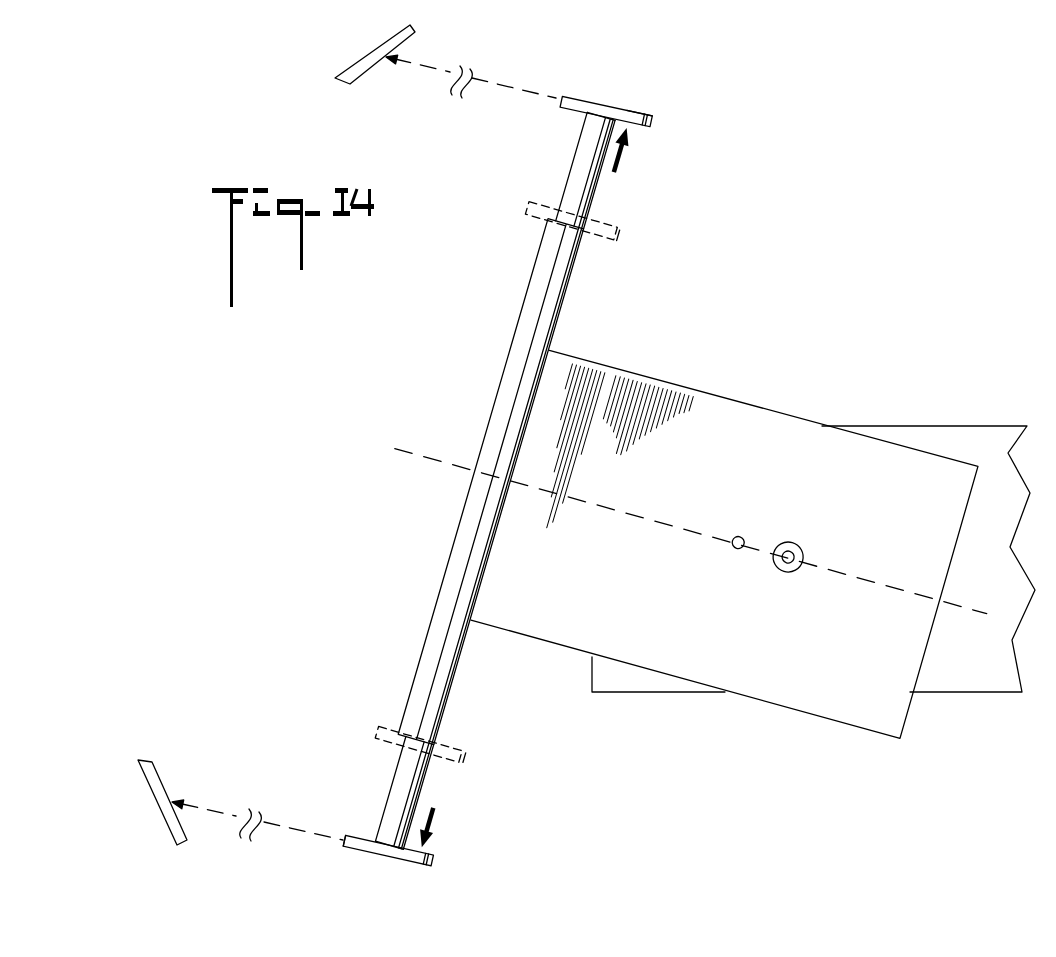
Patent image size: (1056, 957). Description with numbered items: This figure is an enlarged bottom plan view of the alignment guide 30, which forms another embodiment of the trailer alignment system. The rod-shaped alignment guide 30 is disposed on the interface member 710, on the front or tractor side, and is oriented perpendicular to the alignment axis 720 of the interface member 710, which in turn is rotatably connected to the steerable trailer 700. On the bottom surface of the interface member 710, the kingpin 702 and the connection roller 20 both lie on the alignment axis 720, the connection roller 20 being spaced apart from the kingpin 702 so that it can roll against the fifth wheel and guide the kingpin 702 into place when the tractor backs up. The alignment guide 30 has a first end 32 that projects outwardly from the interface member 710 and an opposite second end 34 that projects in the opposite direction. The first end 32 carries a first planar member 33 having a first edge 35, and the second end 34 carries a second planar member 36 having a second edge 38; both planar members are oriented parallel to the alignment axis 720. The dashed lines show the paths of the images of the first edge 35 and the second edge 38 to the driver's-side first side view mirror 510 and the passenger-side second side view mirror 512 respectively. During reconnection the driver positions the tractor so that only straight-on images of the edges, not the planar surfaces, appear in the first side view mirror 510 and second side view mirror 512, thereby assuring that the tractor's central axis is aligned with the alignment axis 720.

The connection roller 20 is at (803, 560).
The alignment guide 30 is at (446, 380).
The first end 32 is at (385, 838).
The first planar member 33 is at (387, 858).
The second end 34 is at (600, 120).
The first edge 35 is at (343, 840).
The second planar member 36 is at (610, 108).
The second edge 38 is at (557, 97).
The first side view mirror 510 is at (168, 813).
The second side view mirror 512 is at (355, 67).
The steerable trailer 700 is at (980, 450).
The kingpin 702 is at (733, 540).
The interface member 710 is at (612, 622).
The alignment axis 720 is at (463, 470).